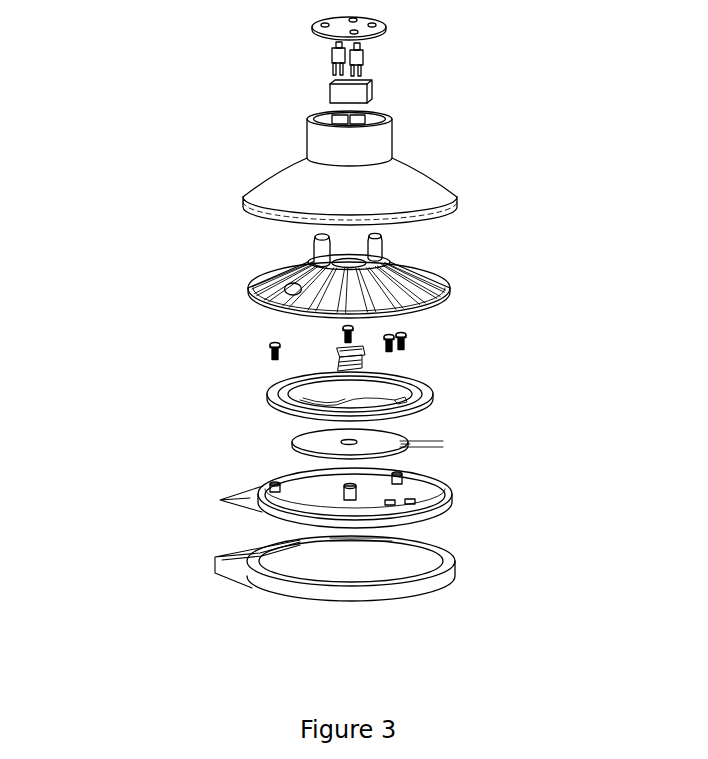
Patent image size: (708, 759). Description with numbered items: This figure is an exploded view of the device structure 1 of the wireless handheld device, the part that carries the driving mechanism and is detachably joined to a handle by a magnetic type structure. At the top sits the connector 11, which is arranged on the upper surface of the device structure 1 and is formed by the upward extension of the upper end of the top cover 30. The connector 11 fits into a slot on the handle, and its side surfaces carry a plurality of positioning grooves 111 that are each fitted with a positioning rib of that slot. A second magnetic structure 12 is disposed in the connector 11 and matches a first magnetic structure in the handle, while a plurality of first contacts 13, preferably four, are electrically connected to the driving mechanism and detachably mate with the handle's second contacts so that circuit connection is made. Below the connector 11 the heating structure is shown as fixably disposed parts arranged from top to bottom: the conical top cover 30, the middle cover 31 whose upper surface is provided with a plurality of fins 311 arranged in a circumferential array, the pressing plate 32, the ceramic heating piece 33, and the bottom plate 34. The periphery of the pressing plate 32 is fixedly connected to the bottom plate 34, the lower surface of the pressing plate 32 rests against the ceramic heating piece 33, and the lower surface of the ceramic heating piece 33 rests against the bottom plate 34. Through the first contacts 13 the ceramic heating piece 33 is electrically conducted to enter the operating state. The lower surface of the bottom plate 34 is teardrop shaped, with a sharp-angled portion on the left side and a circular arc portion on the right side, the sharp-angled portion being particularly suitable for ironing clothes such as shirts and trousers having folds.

The device structure 1 is at (323, 165).
The connector 11 is at (327, 113).
The positioning grooves 111 is at (312, 118).
The second magnetic structure 12 is at (357, 88).
The first contacts 13 is at (331, 55).
The top cover 30 is at (334, 171).
The middle cover 31 is at (242, 275).
The fins 311 is at (315, 300).
The pressing plate 32 is at (343, 400).
The ceramic heating piece 33 is at (333, 442).
The bottom plate 34 is at (227, 500).